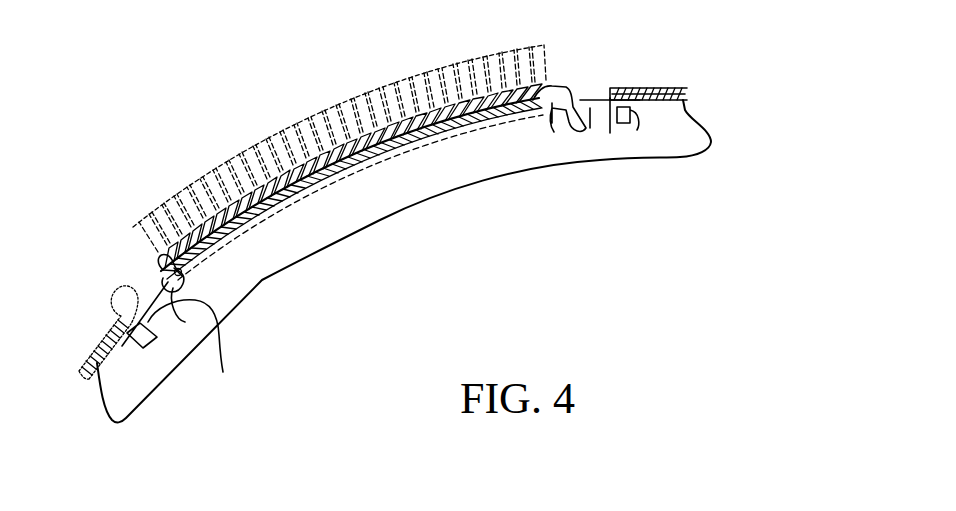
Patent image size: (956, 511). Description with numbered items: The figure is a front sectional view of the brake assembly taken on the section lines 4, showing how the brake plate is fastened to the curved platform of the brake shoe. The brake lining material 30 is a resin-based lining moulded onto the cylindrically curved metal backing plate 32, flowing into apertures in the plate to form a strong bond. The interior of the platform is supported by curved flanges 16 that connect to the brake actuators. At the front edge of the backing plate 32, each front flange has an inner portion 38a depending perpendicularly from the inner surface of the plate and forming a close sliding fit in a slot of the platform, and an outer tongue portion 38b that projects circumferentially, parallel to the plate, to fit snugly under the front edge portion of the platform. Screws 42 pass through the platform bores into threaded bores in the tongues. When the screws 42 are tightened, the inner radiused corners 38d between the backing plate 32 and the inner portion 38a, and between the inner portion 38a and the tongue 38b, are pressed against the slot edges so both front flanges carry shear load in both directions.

The outer shell band 4 is at (687, 90).
The curved flanges 16 is at (430, 190).
The brake lining material 30 is at (198, 170).
The backing plate 32 is at (282, 178).
The inner portion 38a is at (155, 272).
The outer tongue portion 38b is at (641, 133).
The inner radiused corners 38d is at (178, 272).
The screws 42 is at (120, 303).